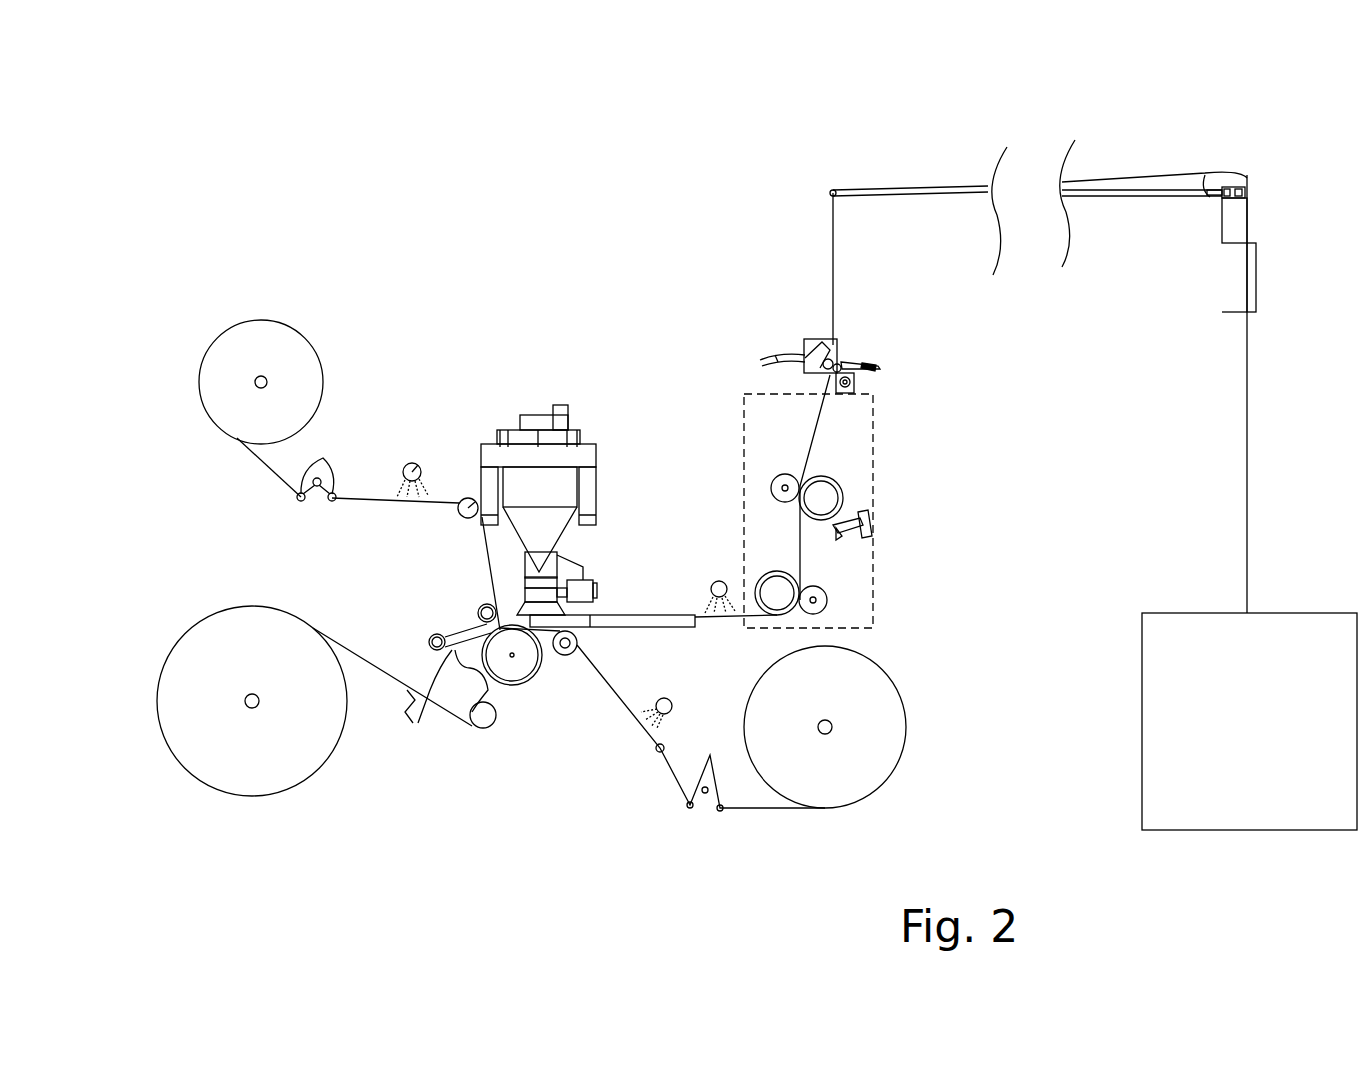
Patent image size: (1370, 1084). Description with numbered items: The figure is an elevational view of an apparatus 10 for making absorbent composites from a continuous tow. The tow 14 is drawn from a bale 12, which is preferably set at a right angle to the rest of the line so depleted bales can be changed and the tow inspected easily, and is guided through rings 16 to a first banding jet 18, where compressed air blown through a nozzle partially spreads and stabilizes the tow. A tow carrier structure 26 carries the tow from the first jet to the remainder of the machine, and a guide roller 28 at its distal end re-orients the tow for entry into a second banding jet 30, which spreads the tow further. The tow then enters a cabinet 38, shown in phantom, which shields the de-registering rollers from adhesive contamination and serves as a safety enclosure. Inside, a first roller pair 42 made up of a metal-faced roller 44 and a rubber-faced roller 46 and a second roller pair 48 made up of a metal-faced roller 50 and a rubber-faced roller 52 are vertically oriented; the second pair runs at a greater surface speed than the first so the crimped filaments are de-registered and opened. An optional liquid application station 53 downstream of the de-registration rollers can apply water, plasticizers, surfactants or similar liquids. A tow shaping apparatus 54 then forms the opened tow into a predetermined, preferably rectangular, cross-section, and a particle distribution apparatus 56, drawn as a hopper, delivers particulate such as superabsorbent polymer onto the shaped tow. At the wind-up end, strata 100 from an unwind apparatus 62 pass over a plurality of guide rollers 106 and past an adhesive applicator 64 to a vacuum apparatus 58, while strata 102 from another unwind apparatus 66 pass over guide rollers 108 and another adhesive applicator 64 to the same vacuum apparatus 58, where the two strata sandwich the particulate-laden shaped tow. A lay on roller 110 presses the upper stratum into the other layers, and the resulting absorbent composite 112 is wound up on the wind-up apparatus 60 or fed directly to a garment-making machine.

The apparatus 10 is at (1200, 136).
The bale 12 is at (1258, 752).
The tow 14 is at (1247, 505).
The rings 16 is at (1252, 238).
The first banding jet 18 is at (1247, 193).
The tow carrier structure 26 is at (1140, 196).
The guide roller 28 is at (833, 190).
The second banding jet 30 is at (820, 345).
The cabinet 38 is at (744, 445).
The roller pair 42 is at (848, 450).
The metal-faced roller 44 is at (781, 474).
The rubber-faced roller 46 is at (828, 497).
The roller pair 48 is at (772, 566).
The metal-faced roller 50 is at (818, 600).
The rubber-faced roller 52 is at (758, 578).
The liquid application station 53 is at (712, 594).
The tow shaping apparatus 54 is at (627, 647).
The particle distribution apparatus 56 is at (468, 430).
The vacuum apparatus 58 is at (513, 668).
The wind-up apparatus 60 is at (355, 773).
The unwind apparatus 62 is at (935, 718).
The adhesive applicator 64 is at (412, 463).
The unwind apparatus 66 is at (198, 308).
The strata 100 is at (745, 808).
The strata 102 is at (390, 500).
The guide rollers 106 is at (567, 655).
The guide rollers 108 is at (323, 470).
The lay on roller 110 is at (495, 628).
The absorbent composite 112 is at (373, 667).